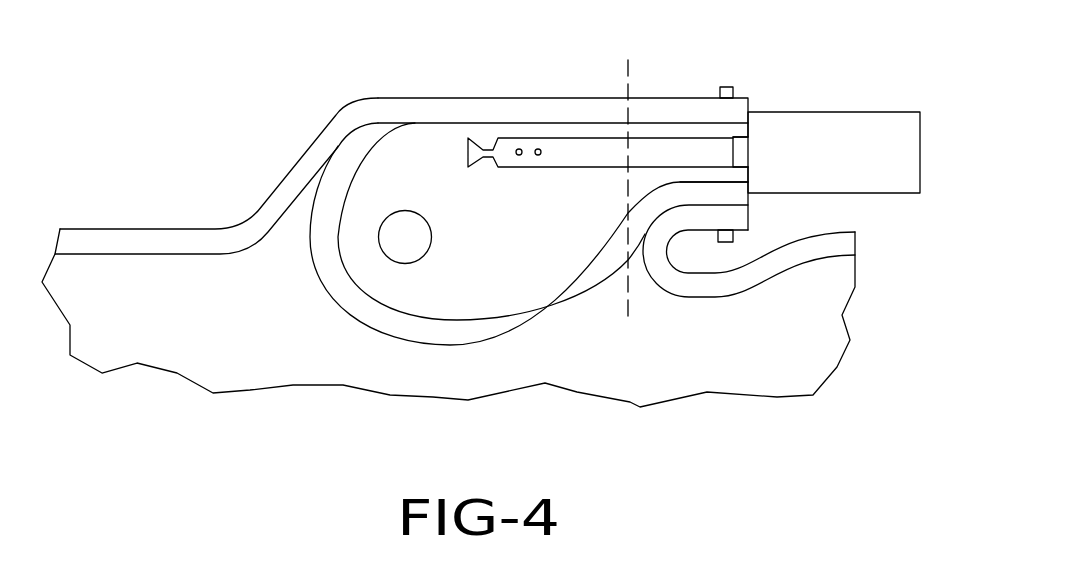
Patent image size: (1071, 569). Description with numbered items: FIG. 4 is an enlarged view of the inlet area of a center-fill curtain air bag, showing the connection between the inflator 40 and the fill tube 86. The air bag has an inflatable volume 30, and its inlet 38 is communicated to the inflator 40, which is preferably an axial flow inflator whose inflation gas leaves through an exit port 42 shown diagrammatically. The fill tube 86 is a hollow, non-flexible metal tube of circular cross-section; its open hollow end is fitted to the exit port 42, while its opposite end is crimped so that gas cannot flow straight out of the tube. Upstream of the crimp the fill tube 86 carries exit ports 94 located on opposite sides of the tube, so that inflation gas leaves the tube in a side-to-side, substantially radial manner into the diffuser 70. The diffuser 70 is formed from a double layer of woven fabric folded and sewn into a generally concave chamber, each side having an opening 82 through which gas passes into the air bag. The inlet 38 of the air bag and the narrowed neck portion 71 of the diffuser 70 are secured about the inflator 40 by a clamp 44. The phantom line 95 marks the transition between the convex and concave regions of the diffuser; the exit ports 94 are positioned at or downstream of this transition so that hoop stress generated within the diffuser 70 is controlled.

The inflatable volume 30 is at (202, 302).
The diffuser 70 is at (377, 158).
The opening 82 is at (386, 256).
The inlet 38 is at (685, 112).
The narrowed neck portion 71 is at (668, 132).
The fill tube 86 is at (585, 135).
The exit ports 94 is at (538, 149).
The exit port 42 is at (733, 157).
The clamp 44 is at (738, 90).
The inflator 40 is at (870, 132).
The phantom line 95 is at (628, 290).